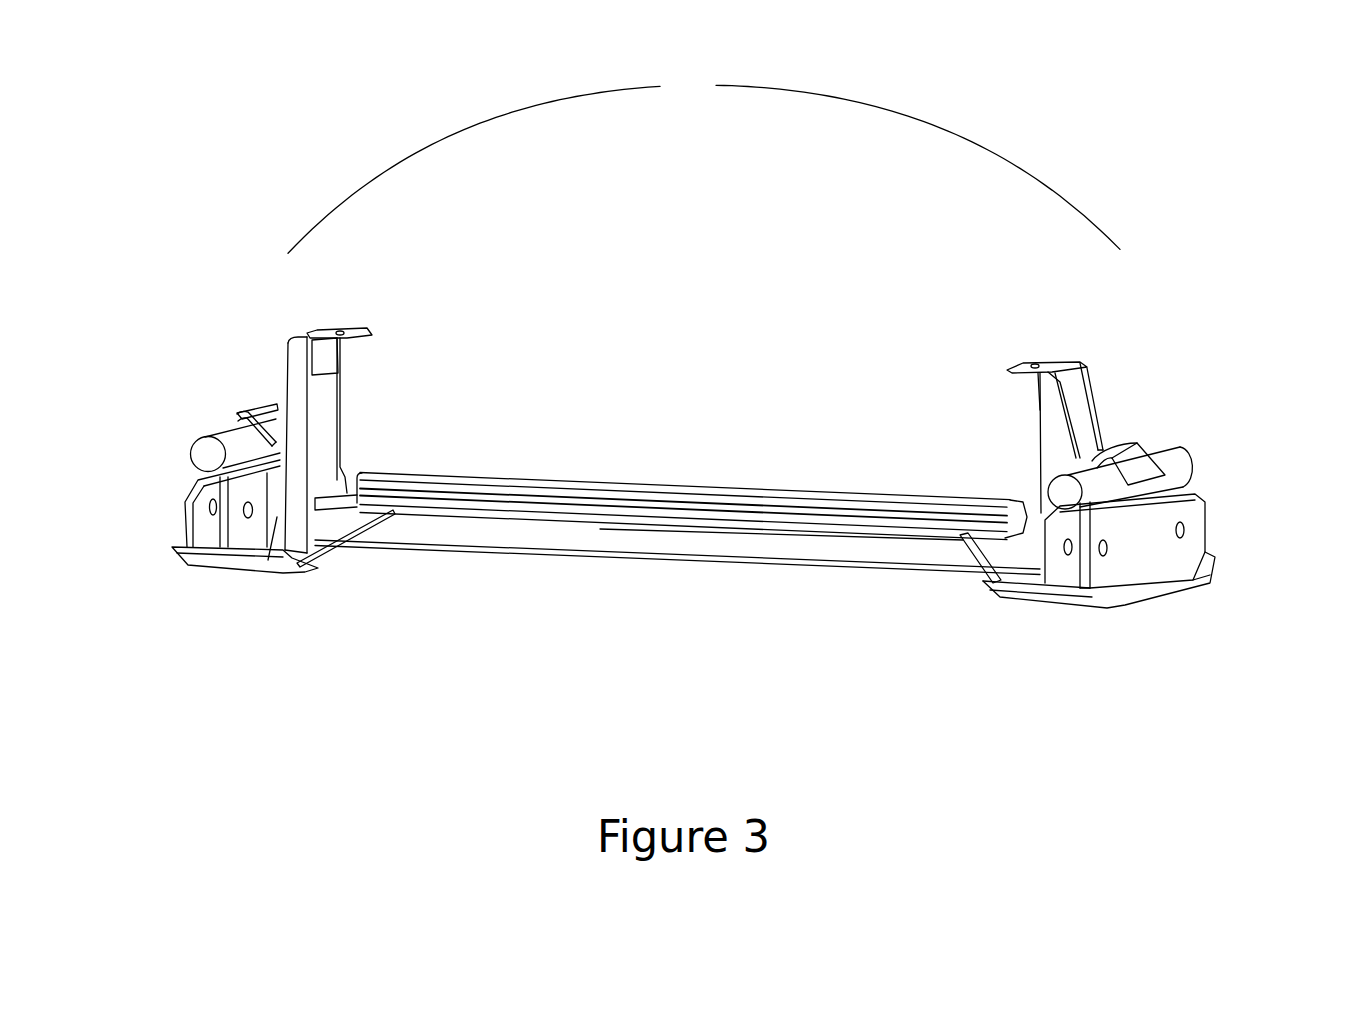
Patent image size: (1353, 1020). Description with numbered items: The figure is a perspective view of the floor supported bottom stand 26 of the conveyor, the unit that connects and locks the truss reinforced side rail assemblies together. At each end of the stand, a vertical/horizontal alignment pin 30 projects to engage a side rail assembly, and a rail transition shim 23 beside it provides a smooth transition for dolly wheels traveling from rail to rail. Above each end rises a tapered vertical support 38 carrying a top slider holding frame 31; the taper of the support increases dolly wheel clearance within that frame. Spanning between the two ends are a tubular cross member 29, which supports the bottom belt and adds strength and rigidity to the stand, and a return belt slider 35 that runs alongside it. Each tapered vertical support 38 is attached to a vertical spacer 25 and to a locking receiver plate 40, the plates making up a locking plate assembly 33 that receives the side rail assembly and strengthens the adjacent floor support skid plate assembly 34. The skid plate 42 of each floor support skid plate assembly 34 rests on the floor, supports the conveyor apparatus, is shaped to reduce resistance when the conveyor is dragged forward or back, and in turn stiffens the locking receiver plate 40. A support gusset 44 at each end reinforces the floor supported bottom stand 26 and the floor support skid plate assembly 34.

The rail transition shim 23 is at (262, 417).
The vertical spacer 25 is at (268, 560).
The floor supported bottom stand 26 is at (704, 163).
The tubular cross member 29 is at (688, 562).
The vertical/horizontal alignment pin 30 is at (208, 435).
The top slider holding frame 31 is at (370, 332).
The locking plate assembly 33 is at (148, 431).
The floor support skid plate assembly 34 is at (225, 643).
The return belt slider 35 is at (700, 483).
The tapered vertical support 38 is at (288, 343).
The locking receiver plate 40 is at (215, 527).
The skid plate 42 is at (300, 563).
The support gusset 44 is at (353, 550).